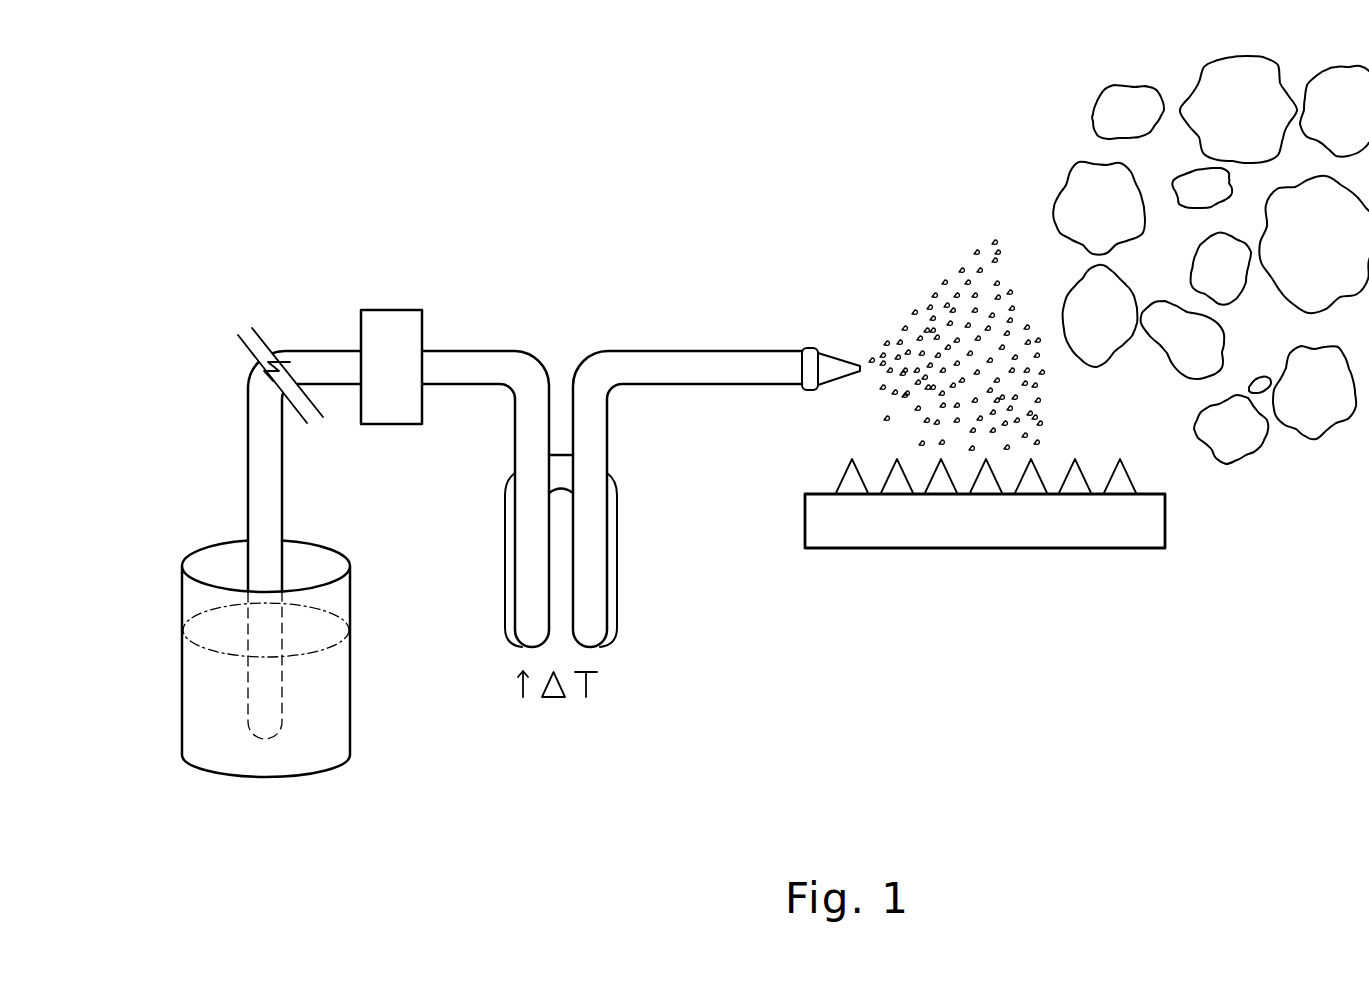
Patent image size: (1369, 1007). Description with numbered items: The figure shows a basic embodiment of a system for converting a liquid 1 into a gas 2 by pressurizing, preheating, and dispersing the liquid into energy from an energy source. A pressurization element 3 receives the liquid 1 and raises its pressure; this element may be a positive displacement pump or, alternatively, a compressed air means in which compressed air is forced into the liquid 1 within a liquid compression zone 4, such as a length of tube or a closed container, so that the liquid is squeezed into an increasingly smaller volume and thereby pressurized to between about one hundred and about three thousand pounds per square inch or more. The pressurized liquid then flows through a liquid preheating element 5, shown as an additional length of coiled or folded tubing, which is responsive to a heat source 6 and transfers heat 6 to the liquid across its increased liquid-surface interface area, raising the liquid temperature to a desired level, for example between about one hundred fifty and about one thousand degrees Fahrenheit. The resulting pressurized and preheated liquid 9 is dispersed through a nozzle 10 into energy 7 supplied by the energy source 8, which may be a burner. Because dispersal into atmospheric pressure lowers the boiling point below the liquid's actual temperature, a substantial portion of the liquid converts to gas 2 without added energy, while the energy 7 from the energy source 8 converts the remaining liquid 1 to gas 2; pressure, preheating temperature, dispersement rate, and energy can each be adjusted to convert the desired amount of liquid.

The liquid 1 is at (330, 705).
The gas 2 is at (1100, 203).
The pressurization element 3 is at (393, 330).
The liquid compression zone 4 is at (443, 372).
The liquid preheating element 5 is at (615, 570).
The heat source 6 is at (602, 687).
The energy 7 is at (853, 478).
The energy source 8 is at (853, 523).
The pressurized and preheated liquid 9 is at (987, 300).
The nozzle 10 is at (837, 358).